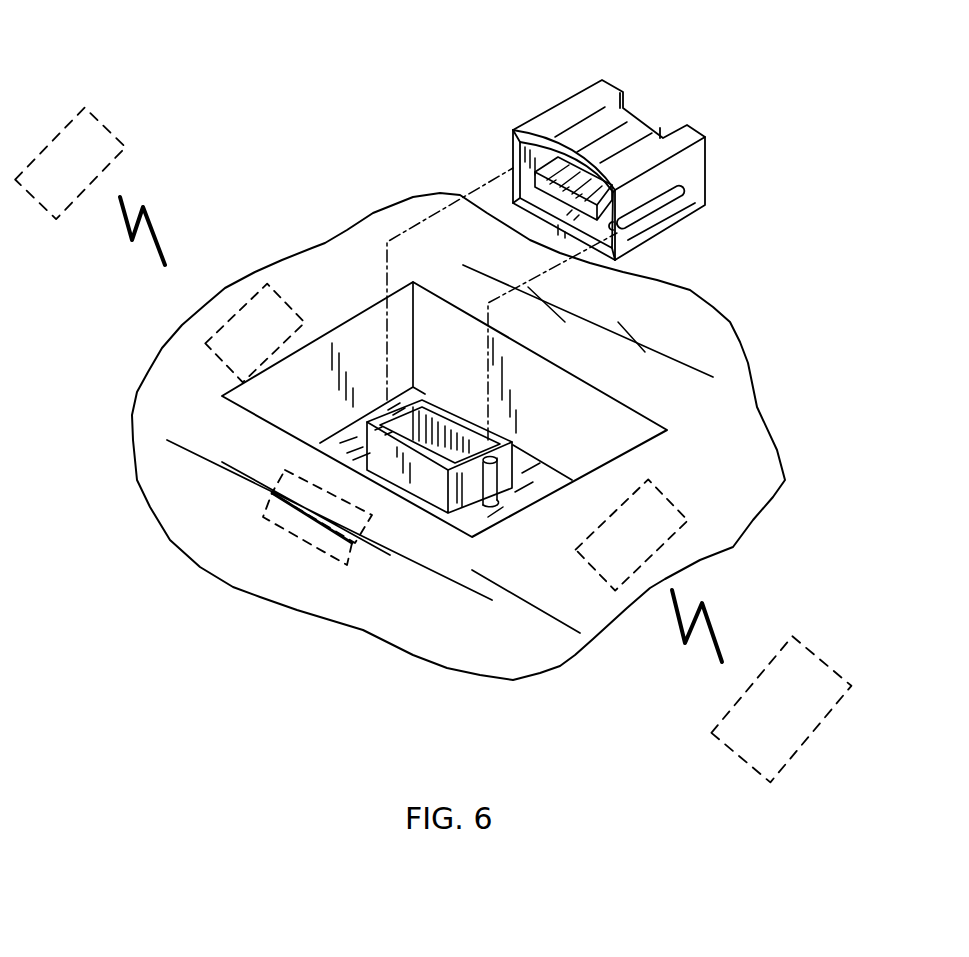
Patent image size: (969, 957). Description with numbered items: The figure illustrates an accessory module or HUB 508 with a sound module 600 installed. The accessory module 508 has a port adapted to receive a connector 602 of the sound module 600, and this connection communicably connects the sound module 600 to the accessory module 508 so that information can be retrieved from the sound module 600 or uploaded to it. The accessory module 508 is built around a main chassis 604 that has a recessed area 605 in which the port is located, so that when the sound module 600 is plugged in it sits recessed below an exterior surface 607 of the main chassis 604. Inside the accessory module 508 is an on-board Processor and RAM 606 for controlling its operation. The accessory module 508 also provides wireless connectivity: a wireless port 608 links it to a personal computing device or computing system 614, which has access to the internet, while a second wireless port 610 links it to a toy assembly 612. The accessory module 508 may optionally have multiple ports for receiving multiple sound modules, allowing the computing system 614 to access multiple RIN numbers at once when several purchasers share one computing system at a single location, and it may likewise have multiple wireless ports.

The accessory module 508 is at (240, 193).
The sound module 600 is at (563, 87).
The connector 602 is at (535, 178).
The main chassis 604 is at (218, 538).
The recessed area 605 is at (578, 410).
The on-board Processor and RAM 606 is at (242, 483).
The exterior surface 607 is at (484, 647).
The wireless port 608 is at (207, 353).
The wireless port 610 is at (697, 498).
The toy assembly 612 is at (807, 623).
The computing system 614 is at (98, 107).